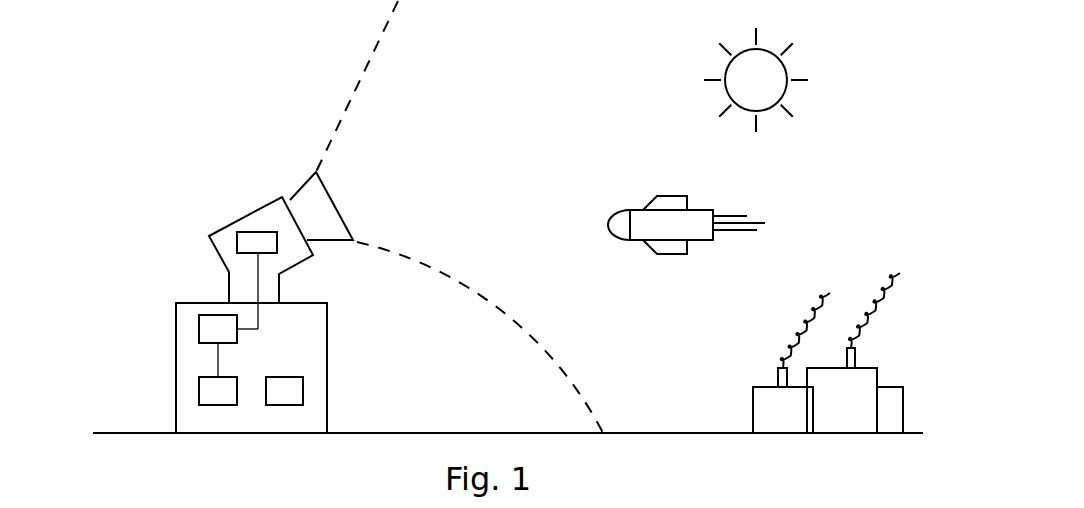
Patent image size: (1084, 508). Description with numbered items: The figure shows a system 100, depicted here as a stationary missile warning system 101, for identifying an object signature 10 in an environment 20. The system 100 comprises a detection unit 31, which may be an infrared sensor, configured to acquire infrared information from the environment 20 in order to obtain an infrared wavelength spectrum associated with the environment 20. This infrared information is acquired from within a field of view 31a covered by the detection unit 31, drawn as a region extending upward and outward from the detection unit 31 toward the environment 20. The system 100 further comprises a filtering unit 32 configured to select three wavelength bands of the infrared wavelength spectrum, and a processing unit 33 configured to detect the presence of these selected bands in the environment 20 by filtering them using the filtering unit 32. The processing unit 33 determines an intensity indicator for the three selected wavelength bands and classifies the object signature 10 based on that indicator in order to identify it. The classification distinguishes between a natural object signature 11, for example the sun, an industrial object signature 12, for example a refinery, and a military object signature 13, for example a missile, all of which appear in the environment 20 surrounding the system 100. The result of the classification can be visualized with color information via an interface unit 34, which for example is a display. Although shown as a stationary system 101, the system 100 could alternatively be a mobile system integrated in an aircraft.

The system 100 is at (323, 217).
The stationary missile warning system 101 is at (335, 217).
The detection unit 31 is at (257, 238).
The field of view 31a is at (375, 48).
The filtering unit 32 is at (207, 328).
The processing unit 33 is at (208, 393).
The interface unit 34 is at (287, 389).
The object signature 10 is at (701, 217).
The natural object signature 11 is at (684, 41).
The industrial object signature 12 is at (876, 280).
The military object signature 13 is at (729, 256).
The environment 20 is at (826, 122).